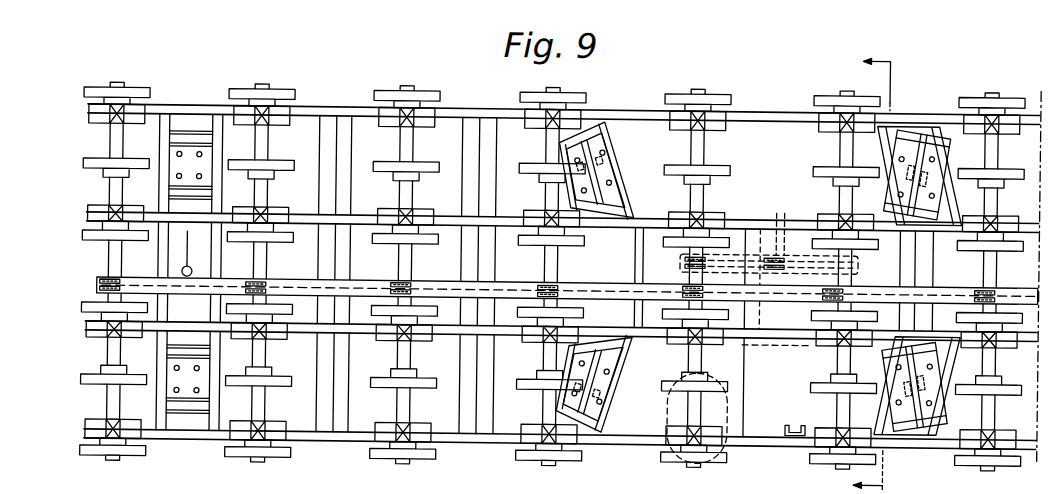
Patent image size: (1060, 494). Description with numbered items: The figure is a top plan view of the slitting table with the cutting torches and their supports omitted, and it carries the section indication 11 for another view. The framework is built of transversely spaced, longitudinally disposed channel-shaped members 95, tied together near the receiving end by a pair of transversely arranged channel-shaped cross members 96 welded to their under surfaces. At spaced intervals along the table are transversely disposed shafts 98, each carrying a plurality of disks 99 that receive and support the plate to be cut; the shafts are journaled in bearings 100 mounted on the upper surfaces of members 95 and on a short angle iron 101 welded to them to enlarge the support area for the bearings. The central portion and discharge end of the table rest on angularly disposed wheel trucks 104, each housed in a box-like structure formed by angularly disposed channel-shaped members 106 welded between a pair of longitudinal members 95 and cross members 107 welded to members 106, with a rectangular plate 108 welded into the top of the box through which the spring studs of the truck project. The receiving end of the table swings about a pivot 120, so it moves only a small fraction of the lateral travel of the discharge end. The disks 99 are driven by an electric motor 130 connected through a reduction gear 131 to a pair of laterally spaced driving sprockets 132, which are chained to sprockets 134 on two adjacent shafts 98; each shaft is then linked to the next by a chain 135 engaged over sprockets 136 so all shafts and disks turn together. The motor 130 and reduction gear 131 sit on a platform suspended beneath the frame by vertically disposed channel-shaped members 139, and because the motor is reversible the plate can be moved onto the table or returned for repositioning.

The section line 11- 11 is at (874, 259).
The channel-shaped members 95 is at (478, 104).
The channel-shaped cross members 96 is at (217, 412).
The transversely disposed shafts 98 is at (705, 152).
The disks 99 is at (374, 92).
The bearings 100 is at (95, 336).
The short angle iron 101 is at (95, 208).
The wheel trucks 104 is at (604, 118).
The angularly disposed channel-shaped members 106 is at (636, 197).
The cross members 107 is at (594, 125).
The rectangular plate 108 is at (607, 162).
The pivot 120 is at (184, 268).
The electric motor 130 is at (729, 415).
The reduction gear 131 is at (796, 338).
The driving sprockets 132 is at (778, 206).
The sprockets 134 is at (985, 279).
The chain 135 is at (236, 278).
The sprockets 136 is at (270, 281).
The vertically disposed channel-shaped members 139 is at (799, 417).